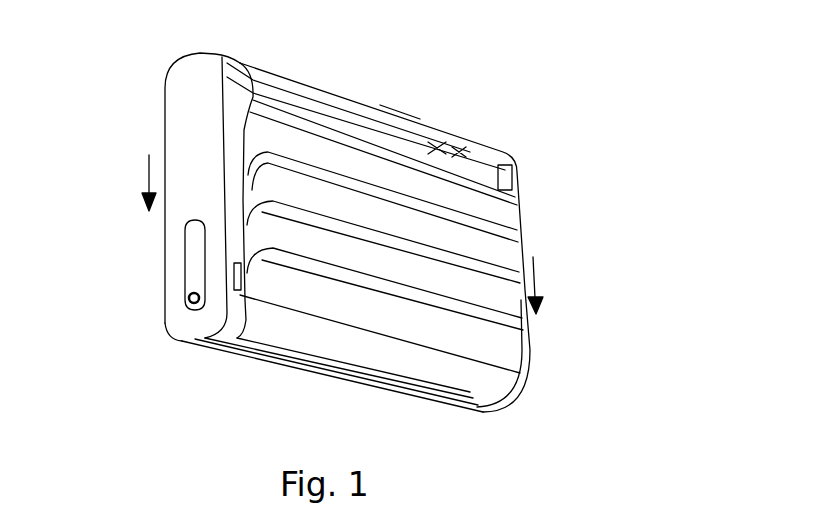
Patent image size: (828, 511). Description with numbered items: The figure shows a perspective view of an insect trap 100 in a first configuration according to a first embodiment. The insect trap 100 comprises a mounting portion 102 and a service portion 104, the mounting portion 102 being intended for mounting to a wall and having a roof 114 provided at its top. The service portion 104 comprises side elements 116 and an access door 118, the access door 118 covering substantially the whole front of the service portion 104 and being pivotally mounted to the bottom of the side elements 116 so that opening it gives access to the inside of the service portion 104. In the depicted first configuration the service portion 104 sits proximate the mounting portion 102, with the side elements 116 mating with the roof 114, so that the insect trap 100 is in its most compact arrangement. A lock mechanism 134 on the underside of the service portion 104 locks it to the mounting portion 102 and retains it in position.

The insect trap 100 is at (134, 118).
The mounting portion 102 is at (404, 100).
The roof 114 is at (453, 142).
The side elements 116 is at (190, 260).
The service portion 104 is at (546, 324).
The access door 118 is at (315, 298).
The lock mechanism 134 is at (346, 391).